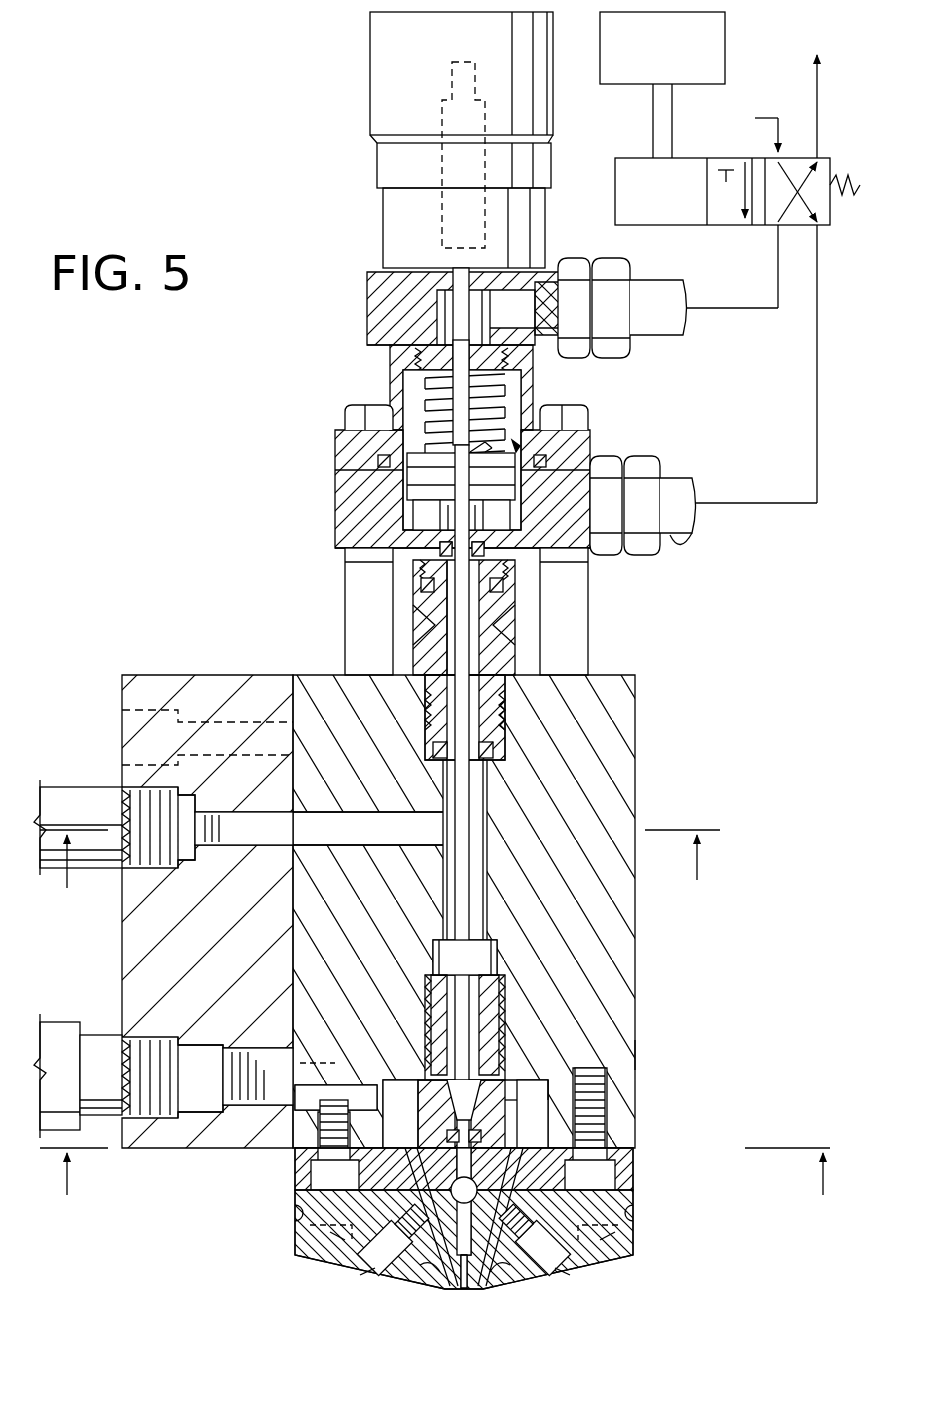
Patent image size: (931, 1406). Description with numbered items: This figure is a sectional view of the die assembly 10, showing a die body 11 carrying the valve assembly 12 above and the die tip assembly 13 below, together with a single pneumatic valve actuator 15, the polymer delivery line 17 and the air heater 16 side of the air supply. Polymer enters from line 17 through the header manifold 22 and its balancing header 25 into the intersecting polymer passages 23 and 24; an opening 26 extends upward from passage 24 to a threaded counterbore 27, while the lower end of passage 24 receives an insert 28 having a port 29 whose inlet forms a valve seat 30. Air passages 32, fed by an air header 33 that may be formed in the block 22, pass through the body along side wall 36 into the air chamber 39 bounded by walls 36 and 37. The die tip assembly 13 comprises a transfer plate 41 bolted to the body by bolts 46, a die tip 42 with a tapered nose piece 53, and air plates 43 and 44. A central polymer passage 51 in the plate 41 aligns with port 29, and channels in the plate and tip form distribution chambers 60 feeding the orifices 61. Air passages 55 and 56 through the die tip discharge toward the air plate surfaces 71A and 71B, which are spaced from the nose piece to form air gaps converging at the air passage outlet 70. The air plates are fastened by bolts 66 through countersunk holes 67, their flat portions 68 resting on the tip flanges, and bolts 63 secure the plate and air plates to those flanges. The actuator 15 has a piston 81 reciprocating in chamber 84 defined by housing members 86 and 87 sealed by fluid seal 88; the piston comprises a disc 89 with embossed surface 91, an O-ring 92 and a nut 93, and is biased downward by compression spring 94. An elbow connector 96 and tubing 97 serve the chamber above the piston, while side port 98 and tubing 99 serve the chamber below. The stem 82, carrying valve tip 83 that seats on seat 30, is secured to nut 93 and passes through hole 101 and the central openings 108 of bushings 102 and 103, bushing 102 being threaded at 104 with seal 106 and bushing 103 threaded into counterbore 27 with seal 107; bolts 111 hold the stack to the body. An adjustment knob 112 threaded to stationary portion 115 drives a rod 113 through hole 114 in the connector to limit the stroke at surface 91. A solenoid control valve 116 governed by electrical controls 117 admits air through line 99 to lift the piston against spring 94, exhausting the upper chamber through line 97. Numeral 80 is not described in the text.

The die assembly 10 is at (192, 568).
The die body 11 is at (640, 965).
The valve assembly 12 is at (585, 1065).
The die tip assembly 13 is at (275, 1192).
The valve actuator 15 is at (378, 360).
The in-line air heater 16 is at (68, 1030).
The polymer delivery line 17 is at (85, 805).
The header manifold 22 is at (135, 690).
The polymer passage 23 is at (395, 848).
The polymer passage 24 is at (470, 915).
The balancing header 25 is at (245, 830).
The opening 26 is at (455, 780).
The threaded counterbore 27 is at (500, 720).
The insert 28 is at (530, 1095).
The port 29 is at (408, 1086).
The valve seat 30 is at (432, 1068).
The air passage 32 is at (392, 1062).
The air header 33 is at (255, 1070).
The side wall 36 is at (300, 1115).
The side wall 37 is at (625, 1060).
The air chamber 39 is at (548, 1105).
The transfer plate 41 is at (640, 1160).
The die tip 42 is at (640, 1196).
The air plate 43 is at (330, 1236).
The air plate 44 is at (640, 1245).
The bolt 46 is at (315, 1165).
The central polymer passage 51 is at (442, 1160).
The tapered nose piece 53 is at (522, 1276).
The air passage 55 is at (375, 1260).
The air passage 56 is at (545, 1272).
The polymer flow distribution chamber 60 is at (385, 1282).
The orifice 61 is at (470, 1292).
The bolt 63 is at (325, 1240).
The bolt 66 is at (348, 1265).
The countersunk hole 67 is at (582, 1266).
The flat portion 68 is at (298, 1212).
The air passage outlet 70 is at (462, 1292).
The surface 71A is at (432, 1292).
The surface 71B is at (488, 1292).
The inlet port 80 is at (105, 1045).
The piston 81 is at (530, 445).
The stem 82 is at (470, 692).
The valve tip 83 is at (508, 1085).
The cylindrical chamber 84 is at (520, 380).
The housing member 86 is at (340, 460).
The housing member 87 is at (348, 512).
The fluid seal 88 is at (338, 443).
The metal disc 89 is at (405, 518).
The embossed surface 91 is at (515, 455).
The O-ring 92 is at (410, 478).
The nut 93 is at (487, 550).
The compression spring 94 is at (430, 395).
The elbow connector 96 is at (382, 325).
The tubing 97 is at (660, 318).
The side port 98 is at (600, 495).
The tubing 99 is at (680, 540).
The hole 101 is at (352, 562).
The bushing 102 is at (413, 625).
The bushing 103 is at (425, 665).
The threaded connection 104 is at (425, 580).
The fluid seal 106 is at (503, 585).
The seal 107 is at (493, 748).
The central opening 108 is at (505, 618).
The bolt 111 is at (345, 416).
The adjustment knob 112 is at (397, 68).
The rod 113 is at (425, 298).
The hole 114 is at (448, 288).
The stationary portion 115 is at (400, 222).
The control valve 116 is at (680, 206).
The electrical controls 117 is at (680, 61).